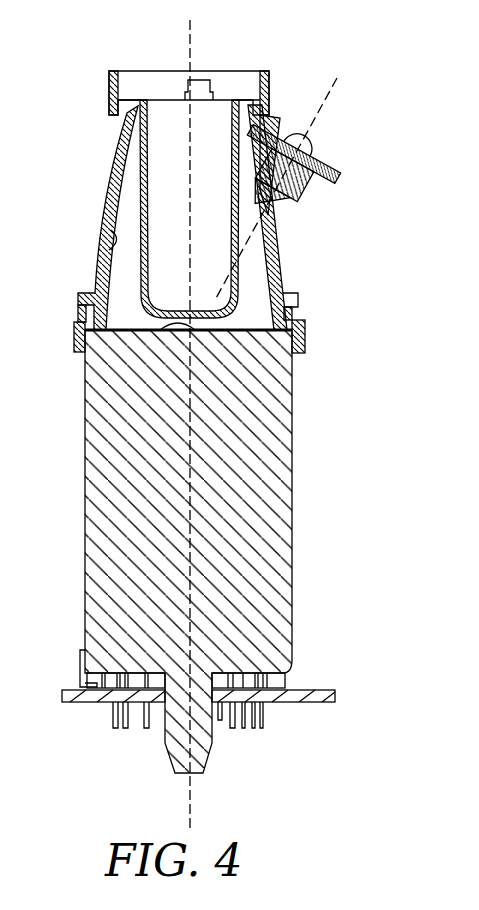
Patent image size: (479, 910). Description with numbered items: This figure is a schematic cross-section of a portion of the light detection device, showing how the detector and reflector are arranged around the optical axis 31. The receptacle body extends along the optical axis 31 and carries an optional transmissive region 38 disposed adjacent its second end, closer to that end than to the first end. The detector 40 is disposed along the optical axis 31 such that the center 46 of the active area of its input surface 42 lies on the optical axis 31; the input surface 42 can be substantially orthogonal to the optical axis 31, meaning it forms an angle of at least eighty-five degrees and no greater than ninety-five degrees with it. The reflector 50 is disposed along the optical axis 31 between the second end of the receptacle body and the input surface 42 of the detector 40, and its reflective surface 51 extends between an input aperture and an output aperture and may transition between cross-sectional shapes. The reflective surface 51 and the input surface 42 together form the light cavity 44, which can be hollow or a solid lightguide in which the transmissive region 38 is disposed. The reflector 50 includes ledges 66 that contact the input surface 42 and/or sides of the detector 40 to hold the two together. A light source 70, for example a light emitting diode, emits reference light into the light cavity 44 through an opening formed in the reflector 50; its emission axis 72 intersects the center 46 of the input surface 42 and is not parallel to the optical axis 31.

The optical axis 31 is at (193, 27).
The transmissive region 38 is at (143, 160).
The detector 40 is at (85, 553).
The input surface 42 is at (127, 330).
The light cavity 44 is at (253, 267).
The center 46 is at (163, 330).
The reflector 50 is at (110, 194).
The reflective surface 51 is at (110, 232).
The ledges 66 is at (83, 353).
The light source 70 is at (333, 150).
The emission axis 72 is at (335, 92).